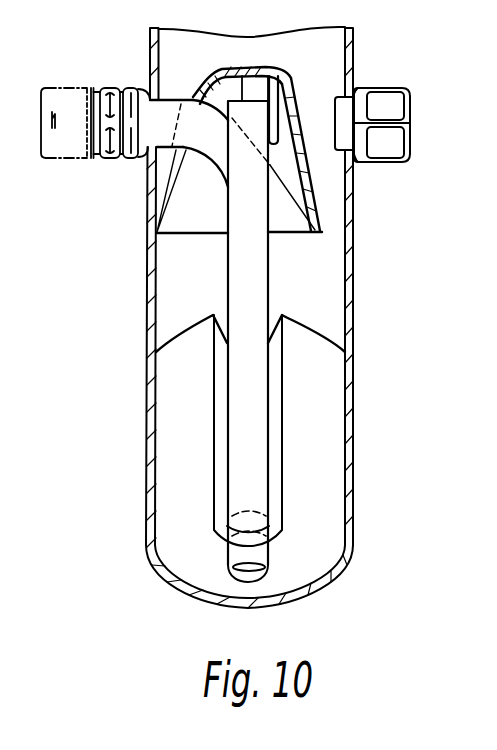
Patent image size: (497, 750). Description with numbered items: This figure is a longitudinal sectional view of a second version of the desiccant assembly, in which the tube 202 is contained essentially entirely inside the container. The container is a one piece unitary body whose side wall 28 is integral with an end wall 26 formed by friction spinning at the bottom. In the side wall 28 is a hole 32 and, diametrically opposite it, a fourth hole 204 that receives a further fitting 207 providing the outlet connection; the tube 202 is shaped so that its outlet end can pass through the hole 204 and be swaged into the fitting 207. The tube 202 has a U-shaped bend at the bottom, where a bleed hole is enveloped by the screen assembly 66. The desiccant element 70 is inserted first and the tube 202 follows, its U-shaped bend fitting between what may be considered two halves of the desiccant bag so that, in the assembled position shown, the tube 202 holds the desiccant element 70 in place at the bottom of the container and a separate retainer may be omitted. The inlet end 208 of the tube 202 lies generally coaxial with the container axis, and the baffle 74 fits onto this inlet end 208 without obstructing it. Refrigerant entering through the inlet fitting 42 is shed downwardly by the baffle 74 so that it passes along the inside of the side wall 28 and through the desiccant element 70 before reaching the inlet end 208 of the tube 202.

The end wall 26 is at (177, 592).
The side wall 28 is at (266, 331).
The hole 32 is at (358, 94).
The inlet fitting 42 is at (389, 87).
The screen assembly 66 is at (278, 562).
The desiccant element 70 is at (170, 440).
The baffle 74 is at (285, 73).
The tube 202 is at (272, 278).
The fourth hole 204 is at (170, 98).
The fitting 207 is at (133, 88).
The inlet end 208 is at (243, 120).